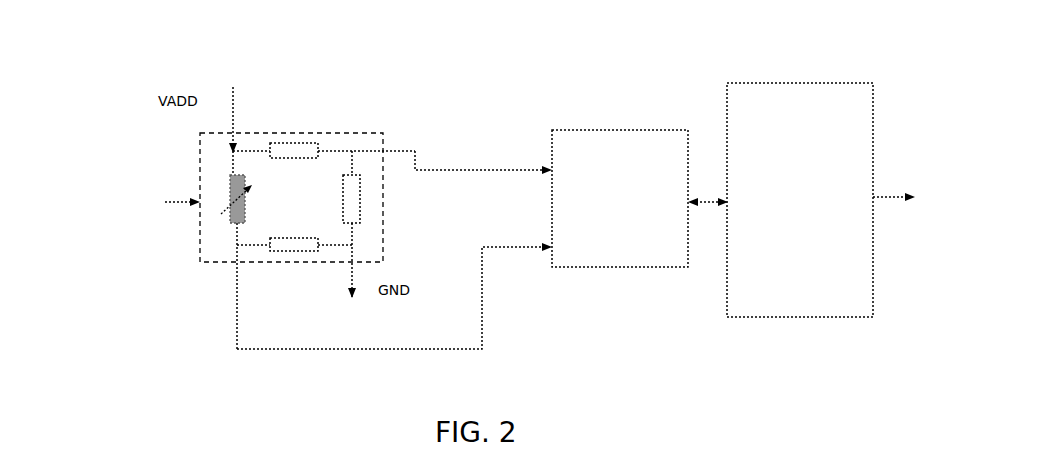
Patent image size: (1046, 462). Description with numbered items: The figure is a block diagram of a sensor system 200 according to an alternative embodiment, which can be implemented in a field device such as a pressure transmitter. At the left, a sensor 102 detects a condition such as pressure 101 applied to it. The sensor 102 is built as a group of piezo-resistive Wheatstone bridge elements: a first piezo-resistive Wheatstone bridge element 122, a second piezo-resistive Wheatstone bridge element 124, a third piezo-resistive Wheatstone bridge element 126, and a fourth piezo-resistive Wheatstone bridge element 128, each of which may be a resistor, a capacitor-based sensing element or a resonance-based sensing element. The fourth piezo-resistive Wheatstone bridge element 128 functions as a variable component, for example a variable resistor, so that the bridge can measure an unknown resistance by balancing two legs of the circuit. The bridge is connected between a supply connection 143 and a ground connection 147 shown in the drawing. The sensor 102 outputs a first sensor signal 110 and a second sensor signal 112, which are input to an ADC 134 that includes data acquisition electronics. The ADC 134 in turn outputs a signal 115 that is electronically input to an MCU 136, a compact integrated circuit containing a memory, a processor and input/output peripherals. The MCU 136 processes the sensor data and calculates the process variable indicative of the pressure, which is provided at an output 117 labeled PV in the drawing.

The sensor system 200 is at (880, 56).
The pressure 101 is at (187, 198).
The sensor 102 is at (355, 132).
The VADD supply node 143 is at (235, 110).
The first piezo-resistive Wheatstone bridge element 122 is at (285, 143).
The second piezo-resistive Wheatstone bridge element 124 is at (360, 199).
The third piezo-resistive Wheatstone bridge element 126 is at (292, 251).
The fourth piezo-resistive Wheatstone bridge element 128 is at (235, 212).
The ground node 147 is at (350, 274).
The first sensor signal 110 is at (525, 167).
The second sensor signal 112 is at (510, 247).
The ADC (Analog to Digital Converter) 134 is at (636, 160).
The signal 115 is at (712, 200).
The MCU (Microcontroller Unit) 136 is at (862, 111).
The pressure value output 117 is at (888, 195).